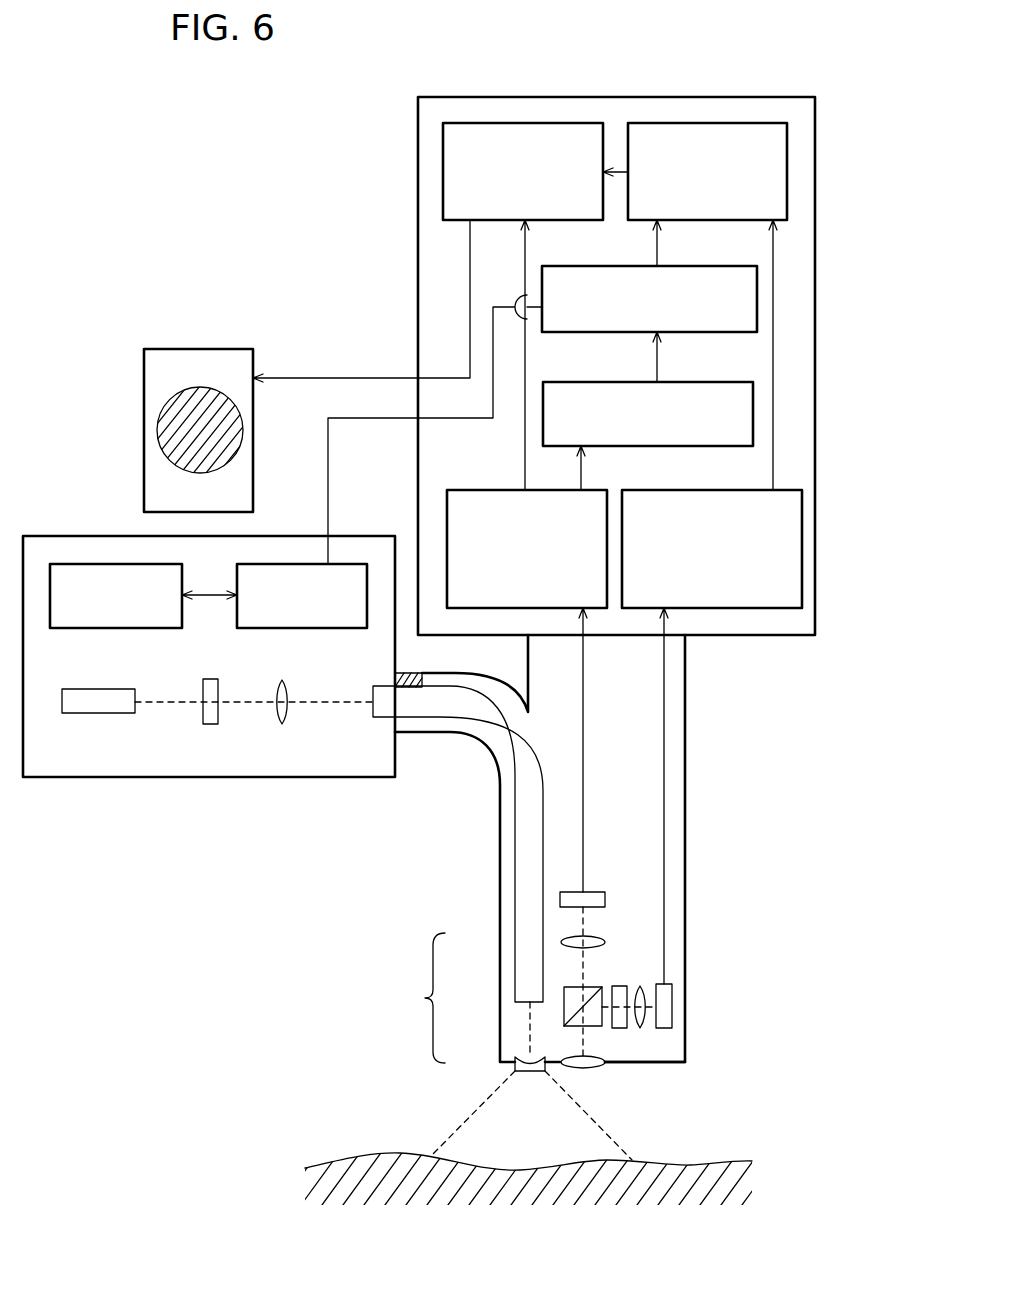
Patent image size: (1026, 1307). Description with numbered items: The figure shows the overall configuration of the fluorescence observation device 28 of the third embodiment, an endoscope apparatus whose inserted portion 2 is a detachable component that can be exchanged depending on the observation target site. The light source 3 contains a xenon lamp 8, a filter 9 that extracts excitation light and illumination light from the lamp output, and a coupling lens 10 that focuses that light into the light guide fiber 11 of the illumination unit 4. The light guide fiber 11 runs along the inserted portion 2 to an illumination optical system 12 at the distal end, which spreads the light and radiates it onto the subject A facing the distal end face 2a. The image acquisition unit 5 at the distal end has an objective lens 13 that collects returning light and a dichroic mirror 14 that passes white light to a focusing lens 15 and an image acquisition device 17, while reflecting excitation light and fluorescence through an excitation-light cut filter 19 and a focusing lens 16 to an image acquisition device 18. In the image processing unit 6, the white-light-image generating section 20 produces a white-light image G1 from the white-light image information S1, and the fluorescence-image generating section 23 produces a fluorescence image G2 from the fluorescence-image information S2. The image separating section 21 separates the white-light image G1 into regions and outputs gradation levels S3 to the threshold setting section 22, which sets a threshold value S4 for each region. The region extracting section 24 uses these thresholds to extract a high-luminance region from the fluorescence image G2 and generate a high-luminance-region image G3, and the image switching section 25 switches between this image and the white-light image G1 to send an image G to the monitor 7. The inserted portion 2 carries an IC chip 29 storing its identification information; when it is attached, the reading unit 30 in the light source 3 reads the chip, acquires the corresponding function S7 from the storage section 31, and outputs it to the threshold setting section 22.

The inserted portion 2 is at (685, 745).
The distal end face 2a is at (685, 1062).
The light source 3 is at (88, 536).
The illumination unit 4 is at (426, 998).
The image acquisition unit 5 is at (700, 947).
The image processing unit 6 is at (700, 97).
The monitor 7 is at (144, 400).
The xenon lamp 8 is at (100, 713).
The filter 9 is at (218, 715).
The coupling lens 10 is at (288, 708).
The light guide fiber 11 is at (525, 965).
The illumination optical system 12 is at (520, 1060).
The objective lens 13 is at (590, 1071).
The dichroic mirror 14 is at (585, 988).
The focusing lens 15 is at (605, 942).
The focusing lens 16 is at (643, 1028).
The image acquisition device 17 is at (597, 892).
The image acquisition device 18 is at (672, 1007).
The excitation-light cut filter 19 is at (620, 1028).
The white-light-image generating section 20 is at (497, 608).
The image separating section 21 is at (585, 382).
The threshold setting section 22 is at (588, 266).
The fluorescence-image generating section 23 is at (737, 608).
The region extracting section 24 is at (735, 123).
The image switching section 25 is at (493, 122).
The fluorescence observation device 28 is at (285, 940).
The IC chip 29 is at (395, 678).
The reading unit 30 is at (312, 628).
The storage section 31 is at (72, 628).
The subject A is at (712, 1162).
The image G is at (355, 377).
The white-light image G1 is at (525, 468).
The fluorescence image G2 is at (773, 468).
The high-luminance-region image G3 is at (625, 172).
The white-light image information S1 is at (583, 720).
The fluorescence-image information S2 is at (662, 774).
The gradation levels S3 is at (657, 357).
The threshold value S4 is at (657, 246).
The function S7 is at (328, 477).